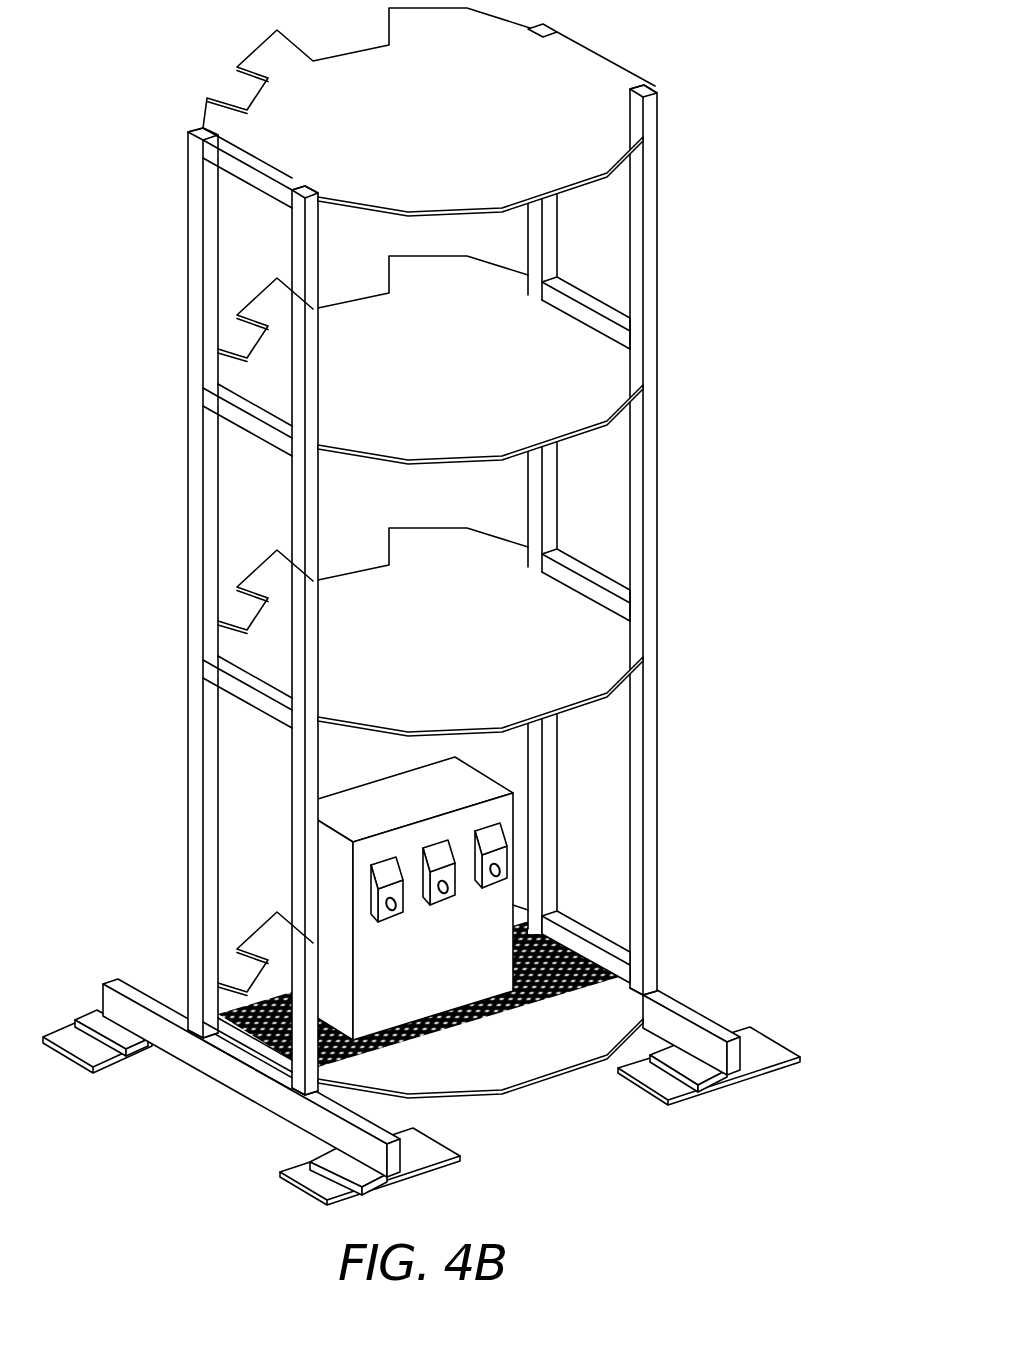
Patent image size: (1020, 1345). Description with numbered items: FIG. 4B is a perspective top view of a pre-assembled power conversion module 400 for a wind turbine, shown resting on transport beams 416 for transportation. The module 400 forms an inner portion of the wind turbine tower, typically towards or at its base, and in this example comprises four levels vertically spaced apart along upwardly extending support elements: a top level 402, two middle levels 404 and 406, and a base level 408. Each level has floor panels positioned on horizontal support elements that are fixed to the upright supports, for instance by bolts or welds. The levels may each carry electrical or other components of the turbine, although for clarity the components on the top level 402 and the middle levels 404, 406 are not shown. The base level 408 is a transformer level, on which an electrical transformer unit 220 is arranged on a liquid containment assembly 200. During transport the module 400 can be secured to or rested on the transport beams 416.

The power conversion module 400 is at (172, 66).
The top level 402 is at (600, 74).
The middle level 404 is at (630, 358).
The middle level 406 is at (630, 634).
The base level 408 is at (627, 997).
The electrical transformer unit 220 is at (507, 810).
The liquid containment assembly 200 is at (258, 1030).
The transport beams 416 is at (276, 1106).